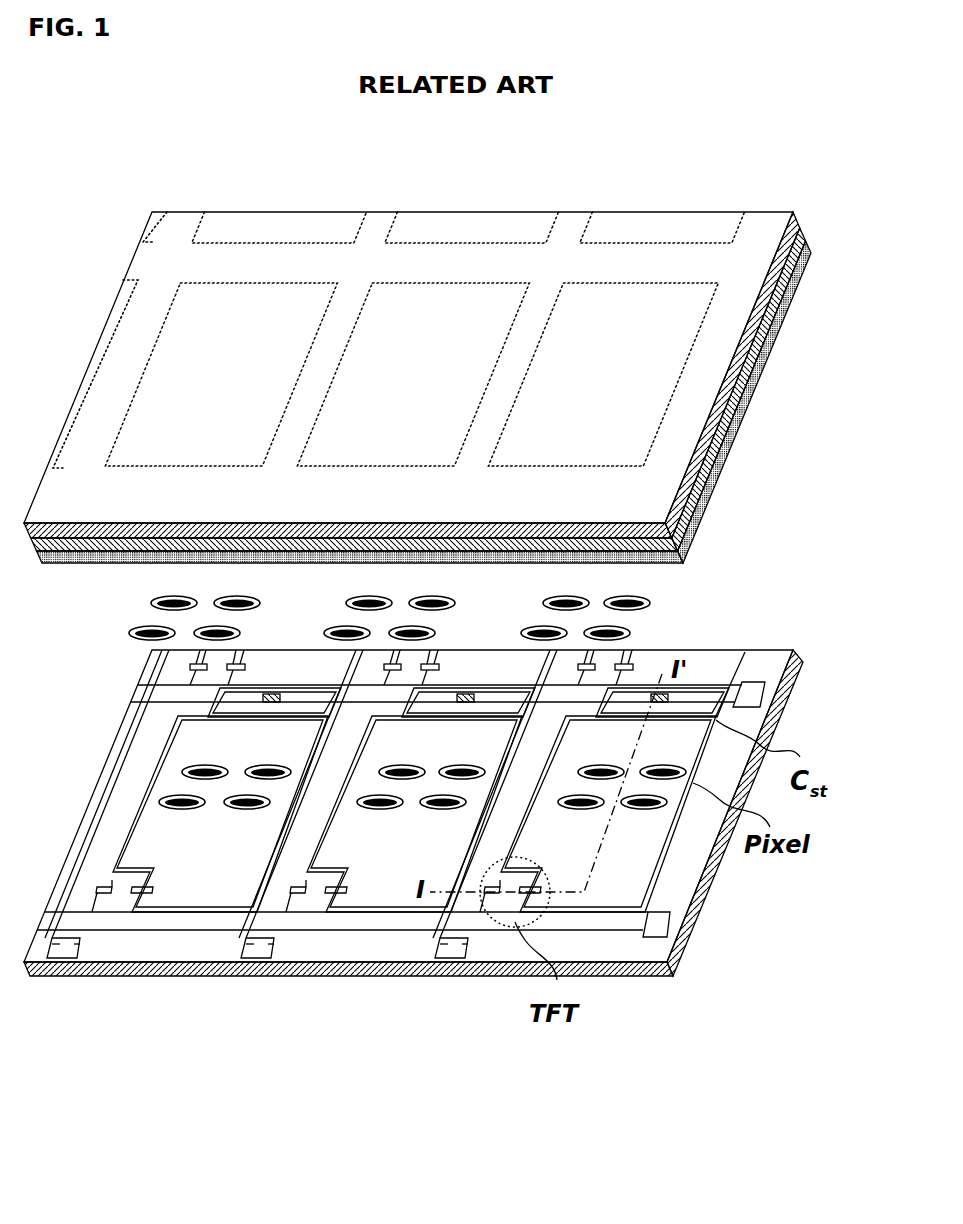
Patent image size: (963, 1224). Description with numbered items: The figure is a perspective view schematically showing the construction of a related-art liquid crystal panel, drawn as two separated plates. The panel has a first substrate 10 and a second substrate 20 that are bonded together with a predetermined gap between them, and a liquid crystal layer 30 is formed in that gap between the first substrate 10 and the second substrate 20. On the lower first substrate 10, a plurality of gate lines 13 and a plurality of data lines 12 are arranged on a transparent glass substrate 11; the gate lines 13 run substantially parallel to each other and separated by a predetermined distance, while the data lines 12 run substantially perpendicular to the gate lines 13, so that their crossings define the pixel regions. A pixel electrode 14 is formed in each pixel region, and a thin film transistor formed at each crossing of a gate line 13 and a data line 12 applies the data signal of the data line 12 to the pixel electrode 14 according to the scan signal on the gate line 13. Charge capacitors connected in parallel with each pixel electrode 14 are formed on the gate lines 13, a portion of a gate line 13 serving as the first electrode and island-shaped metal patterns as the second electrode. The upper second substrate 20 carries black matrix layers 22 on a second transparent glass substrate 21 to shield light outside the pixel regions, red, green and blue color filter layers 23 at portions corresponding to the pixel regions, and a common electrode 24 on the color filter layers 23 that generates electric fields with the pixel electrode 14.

The first substrate 10 is at (295, 1006).
The transparent glass substrate 11 is at (108, 970).
The data line 12 is at (447, 952).
The gate line 13 is at (595, 927).
The pixel electrode 14 is at (655, 853).
The second substrate 20 is at (566, 186).
The second transparent glass substrate 21 is at (796, 214).
The black matrix layer 22 is at (176, 223).
The color filter layer 23 is at (299, 223).
The common electrode 24 is at (722, 472).
The liquid crystal layer 30 is at (652, 604).